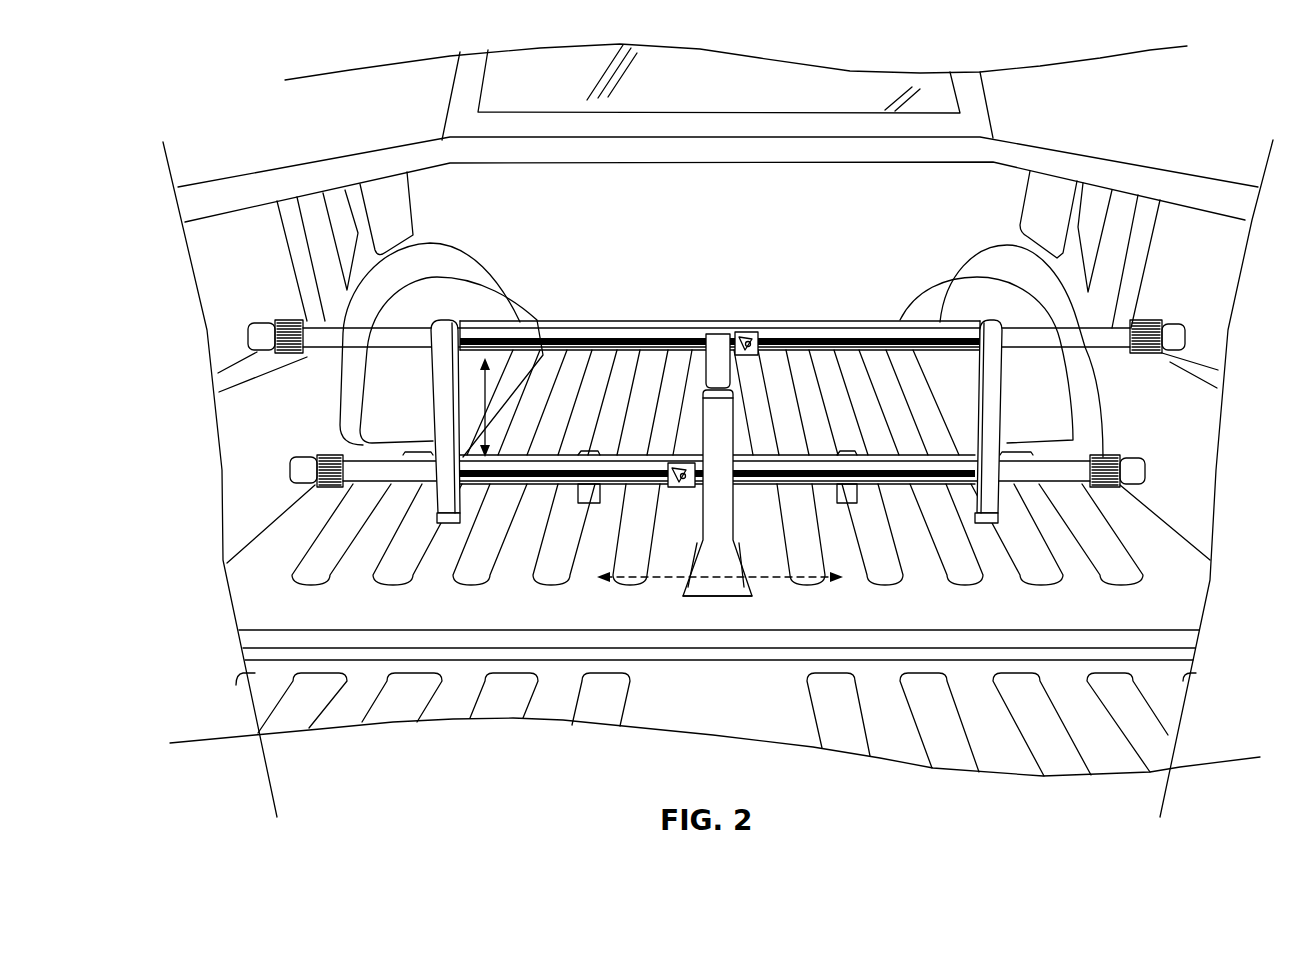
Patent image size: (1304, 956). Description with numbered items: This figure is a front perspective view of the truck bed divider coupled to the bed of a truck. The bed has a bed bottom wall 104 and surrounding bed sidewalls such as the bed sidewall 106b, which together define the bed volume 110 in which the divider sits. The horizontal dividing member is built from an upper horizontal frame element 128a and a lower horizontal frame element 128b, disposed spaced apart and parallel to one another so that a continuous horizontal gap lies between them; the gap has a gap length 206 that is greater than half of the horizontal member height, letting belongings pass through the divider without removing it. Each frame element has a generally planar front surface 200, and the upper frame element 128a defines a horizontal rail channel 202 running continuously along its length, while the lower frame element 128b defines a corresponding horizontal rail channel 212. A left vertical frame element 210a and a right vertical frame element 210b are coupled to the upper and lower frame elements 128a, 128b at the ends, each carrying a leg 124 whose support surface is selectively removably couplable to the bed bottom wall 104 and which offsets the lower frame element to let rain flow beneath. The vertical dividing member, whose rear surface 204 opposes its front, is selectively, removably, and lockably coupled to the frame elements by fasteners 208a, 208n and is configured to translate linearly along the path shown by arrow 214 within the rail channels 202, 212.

The bed bottom wall 104 is at (284, 518).
The bed sidewall 106b is at (543, 217).
The bed volume 110 is at (731, 285).
The leg 124 is at (452, 507).
The upper horizontal frame element 128a is at (1020, 328).
The lower horizontal frame element 128b is at (822, 487).
The front surface 200 is at (472, 331).
The horizontal rail channel 202 is at (552, 332).
The rear surface 204 is at (740, 377).
The gap length 206 is at (485, 418).
The fastener 208a is at (758, 326).
The fastener 208n is at (678, 489).
The left vertical frame element 210a is at (444, 378).
The right vertical frame element 210b is at (994, 407).
The horizontal rail channel 212 is at (526, 490).
The arrow 214 is at (756, 580).